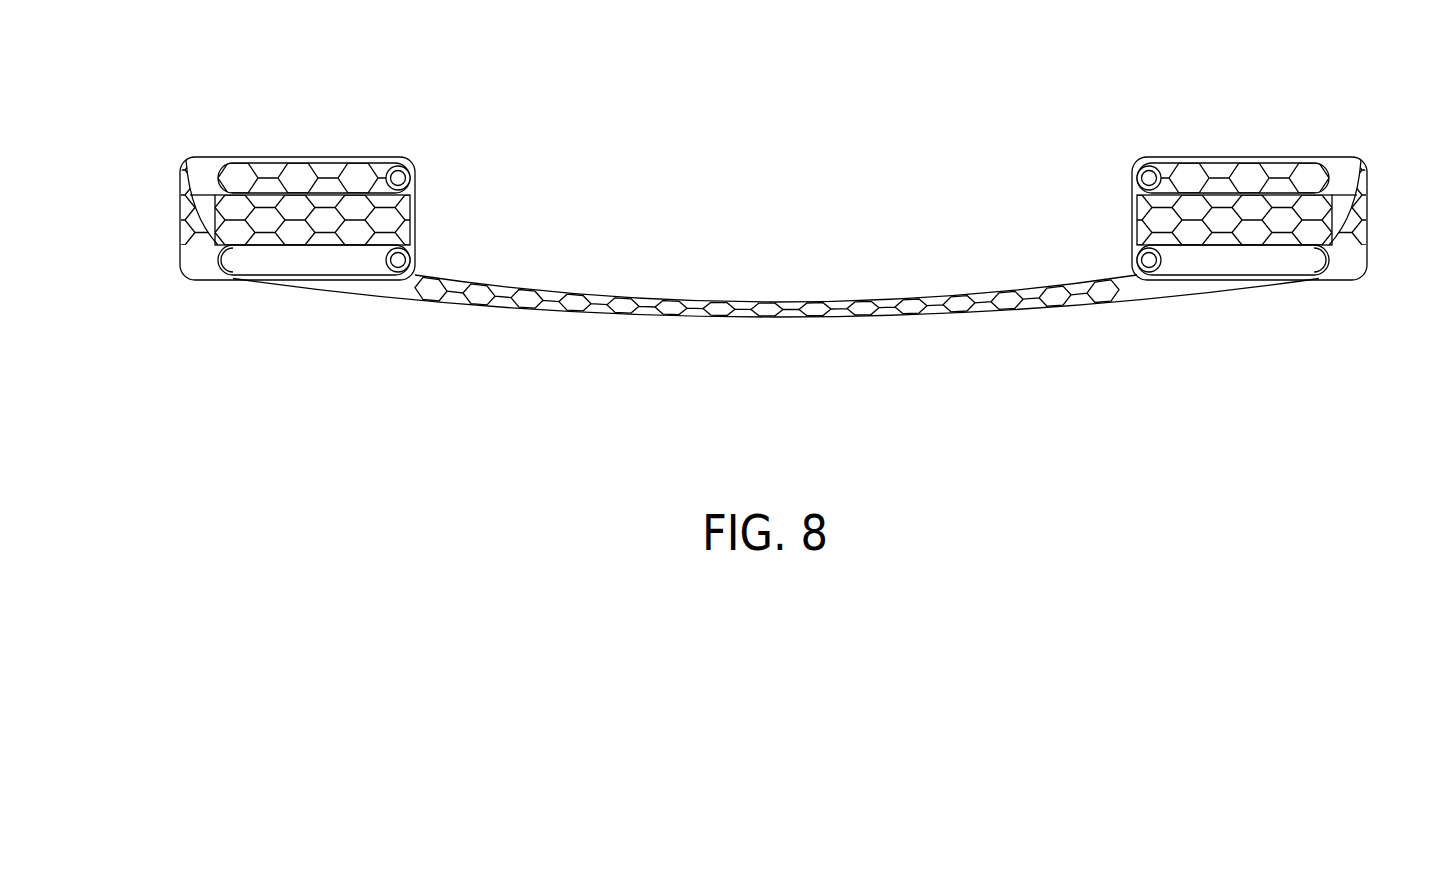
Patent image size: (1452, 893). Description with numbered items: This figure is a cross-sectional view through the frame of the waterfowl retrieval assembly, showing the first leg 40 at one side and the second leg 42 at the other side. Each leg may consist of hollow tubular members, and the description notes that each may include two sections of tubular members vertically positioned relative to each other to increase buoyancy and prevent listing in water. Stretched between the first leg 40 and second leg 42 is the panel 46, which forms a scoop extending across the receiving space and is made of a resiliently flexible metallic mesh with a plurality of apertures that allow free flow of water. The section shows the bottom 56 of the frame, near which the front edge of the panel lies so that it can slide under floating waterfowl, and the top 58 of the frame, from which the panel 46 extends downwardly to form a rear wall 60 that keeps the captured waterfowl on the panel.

The first leg 40 is at (318, 257).
The second leg 42 is at (1255, 258).
The panel 46 is at (1131, 298).
The bottom of the frame 56 is at (213, 280).
The top of the frame 58 is at (322, 160).
The rear wall 60 is at (455, 216).